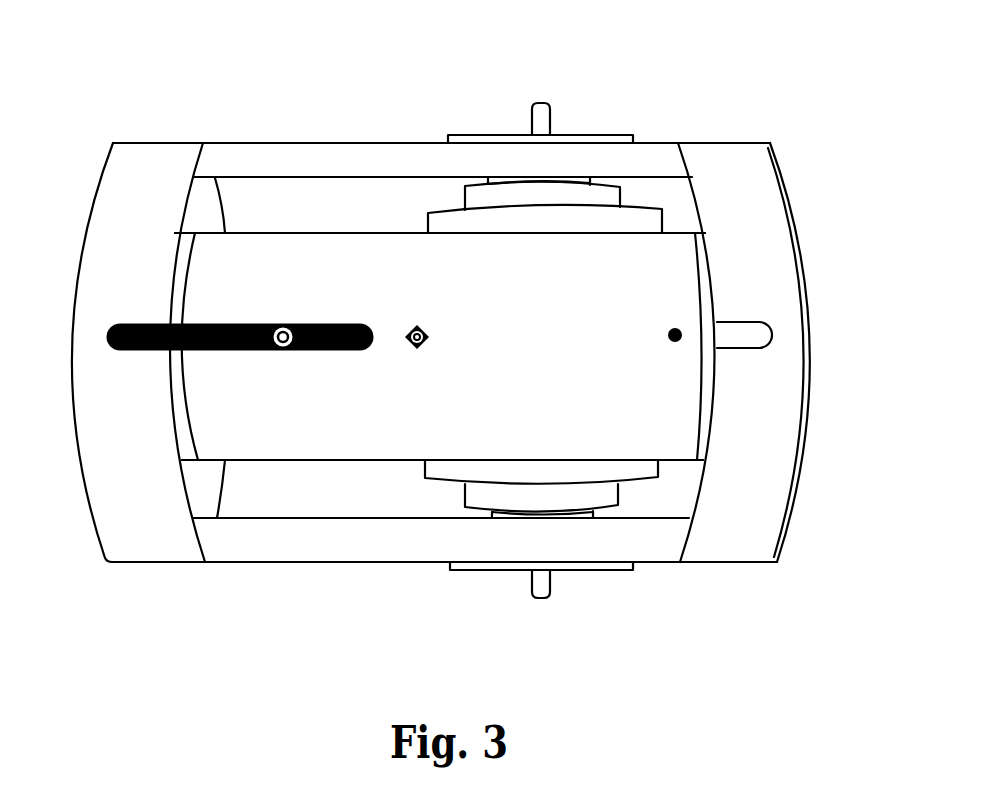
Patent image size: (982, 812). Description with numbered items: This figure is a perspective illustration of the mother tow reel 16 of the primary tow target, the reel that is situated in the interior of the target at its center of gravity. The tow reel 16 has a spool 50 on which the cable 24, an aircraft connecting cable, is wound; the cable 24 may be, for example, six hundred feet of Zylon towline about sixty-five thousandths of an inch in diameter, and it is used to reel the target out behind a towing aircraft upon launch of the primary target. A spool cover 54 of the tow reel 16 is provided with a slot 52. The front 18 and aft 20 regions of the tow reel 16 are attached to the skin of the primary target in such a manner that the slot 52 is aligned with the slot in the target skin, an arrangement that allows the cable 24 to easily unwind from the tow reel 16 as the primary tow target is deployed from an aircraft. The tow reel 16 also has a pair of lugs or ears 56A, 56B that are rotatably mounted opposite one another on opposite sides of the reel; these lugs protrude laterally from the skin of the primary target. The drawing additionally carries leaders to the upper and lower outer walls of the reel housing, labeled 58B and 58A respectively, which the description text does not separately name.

The mother tow reel 16 is at (277, 120).
The front portion of tow reel 18 is at (105, 558).
The aft portion of tow reel 20 is at (777, 562).
The cable 24 is at (320, 350).
The spool 50 is at (633, 232).
The slot 52 is at (223, 322).
The spool cover 54 is at (617, 302).
The lug 56A is at (540, 103).
The lug 56B is at (540, 598).
The lower housing wall 58A is at (297, 562).
The upper housing wall 58B is at (363, 143).